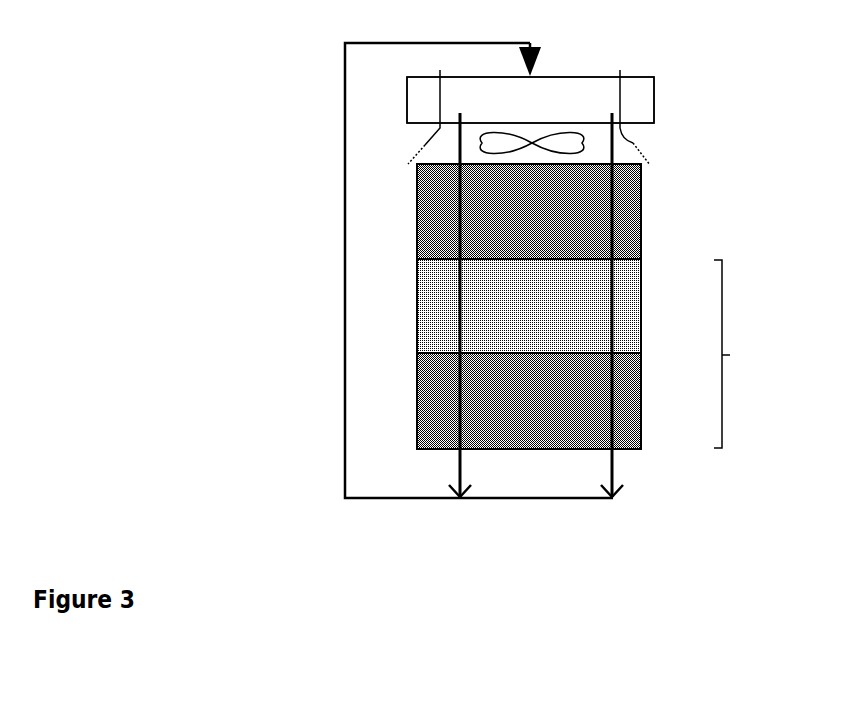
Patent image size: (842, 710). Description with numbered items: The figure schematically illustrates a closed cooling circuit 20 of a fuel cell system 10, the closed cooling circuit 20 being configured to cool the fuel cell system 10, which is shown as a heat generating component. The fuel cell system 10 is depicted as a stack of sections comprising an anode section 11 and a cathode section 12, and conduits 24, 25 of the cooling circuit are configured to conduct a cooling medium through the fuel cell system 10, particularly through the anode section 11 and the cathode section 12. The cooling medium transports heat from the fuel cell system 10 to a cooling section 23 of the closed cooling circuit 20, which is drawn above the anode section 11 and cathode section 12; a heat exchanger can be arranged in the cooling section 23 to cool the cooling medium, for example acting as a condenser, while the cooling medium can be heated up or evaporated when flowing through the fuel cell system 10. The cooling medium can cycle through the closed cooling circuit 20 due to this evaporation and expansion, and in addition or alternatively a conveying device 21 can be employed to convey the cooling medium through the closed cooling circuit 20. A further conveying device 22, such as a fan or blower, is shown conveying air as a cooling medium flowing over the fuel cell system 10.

The fuel cell system 10 is at (591, 354).
The anode section 11 is at (637, 297).
The cathode section 12 is at (637, 382).
The closed cooling circuit 20 is at (706, 79).
The conveying device 21 is at (645, 103).
The conveying device 22 is at (627, 140).
The cooling section 23 is at (632, 215).
The conduit 24 is at (613, 470).
The conduit 25 is at (342, 447).